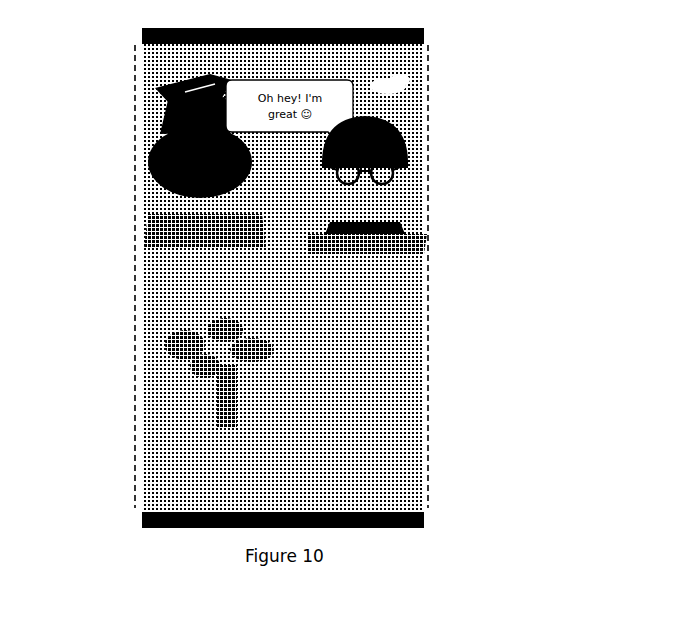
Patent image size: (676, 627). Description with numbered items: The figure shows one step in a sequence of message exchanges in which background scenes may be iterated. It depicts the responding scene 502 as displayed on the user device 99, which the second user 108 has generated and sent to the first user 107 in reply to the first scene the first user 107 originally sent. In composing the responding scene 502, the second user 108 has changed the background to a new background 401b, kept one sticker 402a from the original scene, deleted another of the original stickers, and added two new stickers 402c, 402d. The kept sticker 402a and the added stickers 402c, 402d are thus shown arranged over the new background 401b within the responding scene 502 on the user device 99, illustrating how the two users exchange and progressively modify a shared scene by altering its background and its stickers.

The user device 99 is at (439, 47).
The first user 107 is at (163, 197).
The second user 108 is at (377, 207).
The background 401b is at (390, 312).
The sticker 402a is at (175, 117).
The sticker 402c is at (383, 83).
The sticker 402d is at (207, 378).
The responding scene 502 is at (137, 407).